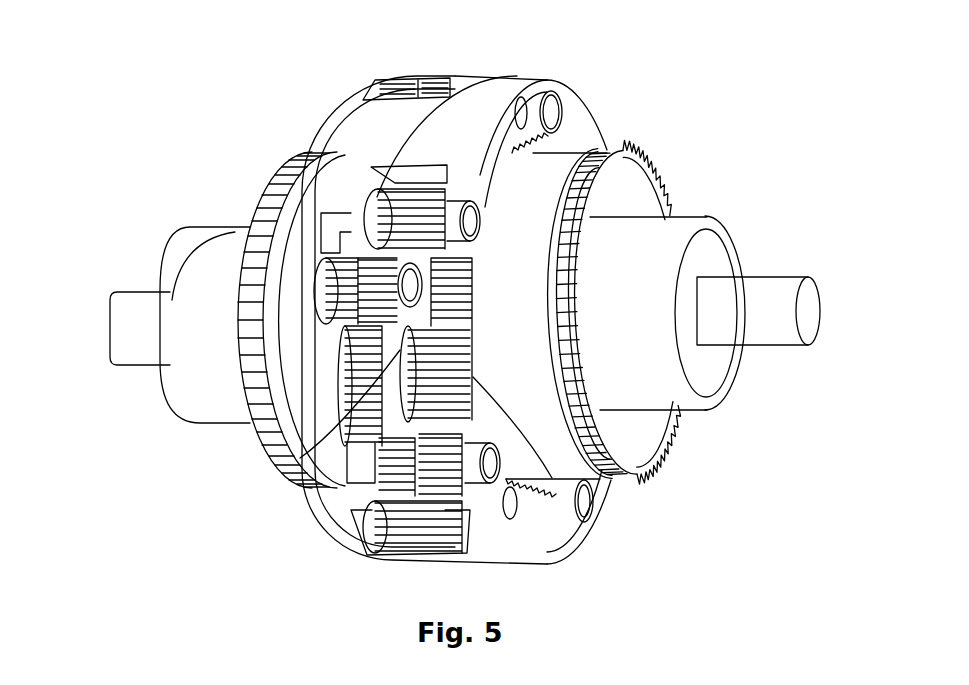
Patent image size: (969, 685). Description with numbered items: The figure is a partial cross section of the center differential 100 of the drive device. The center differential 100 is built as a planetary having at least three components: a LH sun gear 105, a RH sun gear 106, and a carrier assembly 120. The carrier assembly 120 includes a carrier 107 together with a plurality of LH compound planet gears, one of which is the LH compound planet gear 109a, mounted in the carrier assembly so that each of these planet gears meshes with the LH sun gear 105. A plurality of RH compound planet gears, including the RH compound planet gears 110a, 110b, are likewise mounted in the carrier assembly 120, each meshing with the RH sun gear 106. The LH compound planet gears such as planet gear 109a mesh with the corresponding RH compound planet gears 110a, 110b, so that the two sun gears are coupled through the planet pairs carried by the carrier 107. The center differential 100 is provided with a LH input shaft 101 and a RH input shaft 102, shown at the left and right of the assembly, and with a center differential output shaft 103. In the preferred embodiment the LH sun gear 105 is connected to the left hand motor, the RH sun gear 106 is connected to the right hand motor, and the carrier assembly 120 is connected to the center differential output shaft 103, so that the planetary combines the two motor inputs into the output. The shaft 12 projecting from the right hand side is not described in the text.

The center differential 100 is at (150, 58).
The output shaft 12 is at (765, 276).
The LH input shaft 101 is at (247, 250).
The RH input shaft 102 is at (557, 175).
The center differential output shaft 103 is at (172, 401).
The LH sun gear 105 is at (302, 454).
The RH sun gear 106 is at (592, 508).
The carrier 107 is at (331, 132).
The LH compound planet gear 109a is at (323, 290).
The RH compound planet gear 110a is at (391, 188).
The RH compound planet gear 110b is at (462, 488).
The carrier assembly 120 is at (453, 54).